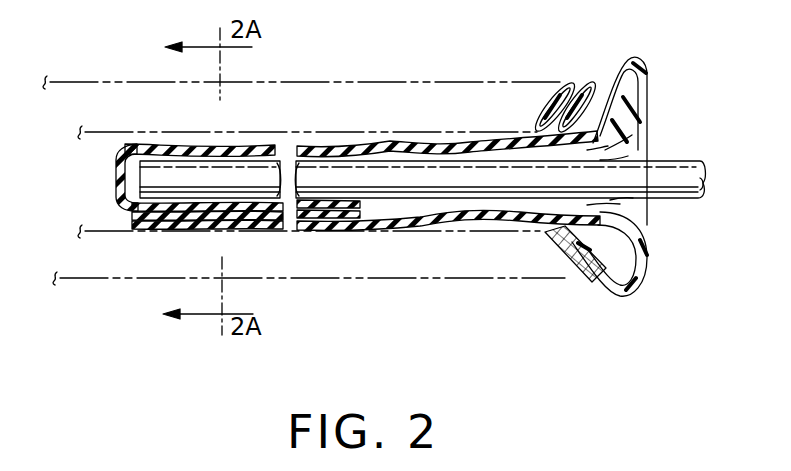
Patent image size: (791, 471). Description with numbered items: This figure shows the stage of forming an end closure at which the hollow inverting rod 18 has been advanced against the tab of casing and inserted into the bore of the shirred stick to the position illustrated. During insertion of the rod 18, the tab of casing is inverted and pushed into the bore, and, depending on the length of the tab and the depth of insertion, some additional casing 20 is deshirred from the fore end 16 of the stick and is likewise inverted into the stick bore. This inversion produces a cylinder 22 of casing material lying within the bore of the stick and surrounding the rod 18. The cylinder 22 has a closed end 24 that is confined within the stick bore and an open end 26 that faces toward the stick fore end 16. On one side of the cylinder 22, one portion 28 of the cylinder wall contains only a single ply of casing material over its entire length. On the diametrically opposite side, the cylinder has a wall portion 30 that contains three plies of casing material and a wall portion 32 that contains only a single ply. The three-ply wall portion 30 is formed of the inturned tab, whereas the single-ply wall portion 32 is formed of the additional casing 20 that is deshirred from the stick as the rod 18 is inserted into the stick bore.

The fore end 16 is at (573, 84).
The hollow inverting rod 18 is at (684, 196).
The additional casing 20 is at (650, 247).
The cylinder 22 is at (145, 125).
The closed end 24 is at (118, 180).
The open end 26 is at (620, 147).
The portion of the cylinder wall 28 is at (344, 144).
The wall portion 30 is at (250, 230).
The wall portion 32 is at (490, 227).